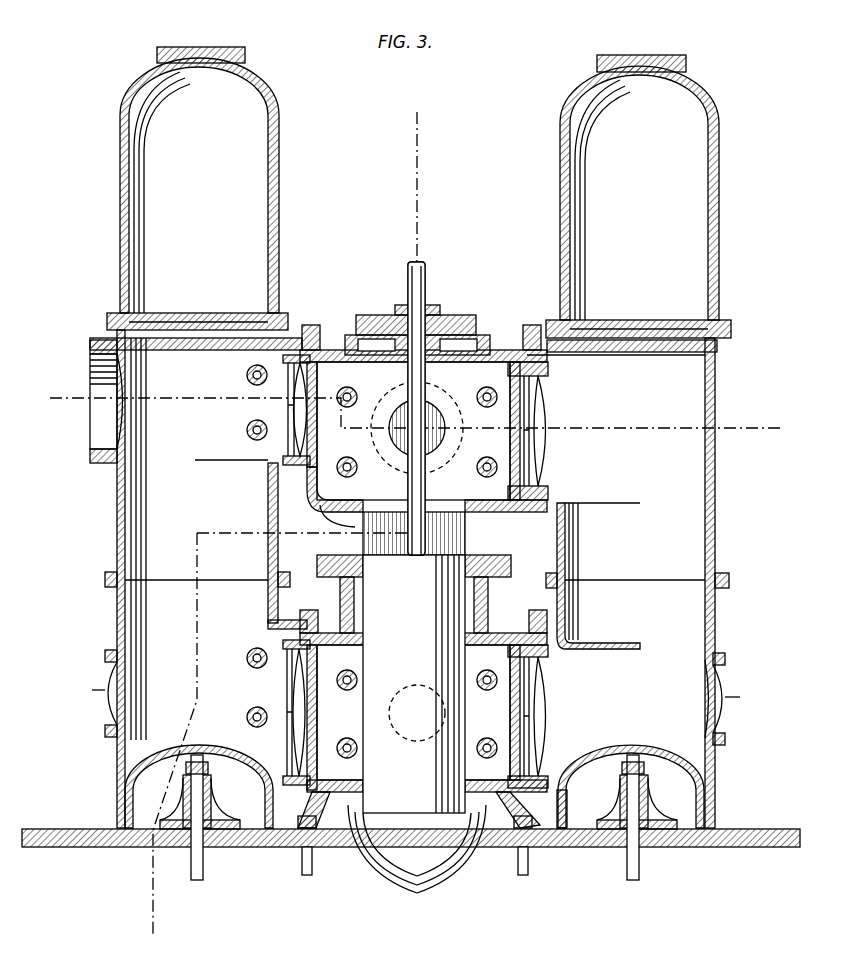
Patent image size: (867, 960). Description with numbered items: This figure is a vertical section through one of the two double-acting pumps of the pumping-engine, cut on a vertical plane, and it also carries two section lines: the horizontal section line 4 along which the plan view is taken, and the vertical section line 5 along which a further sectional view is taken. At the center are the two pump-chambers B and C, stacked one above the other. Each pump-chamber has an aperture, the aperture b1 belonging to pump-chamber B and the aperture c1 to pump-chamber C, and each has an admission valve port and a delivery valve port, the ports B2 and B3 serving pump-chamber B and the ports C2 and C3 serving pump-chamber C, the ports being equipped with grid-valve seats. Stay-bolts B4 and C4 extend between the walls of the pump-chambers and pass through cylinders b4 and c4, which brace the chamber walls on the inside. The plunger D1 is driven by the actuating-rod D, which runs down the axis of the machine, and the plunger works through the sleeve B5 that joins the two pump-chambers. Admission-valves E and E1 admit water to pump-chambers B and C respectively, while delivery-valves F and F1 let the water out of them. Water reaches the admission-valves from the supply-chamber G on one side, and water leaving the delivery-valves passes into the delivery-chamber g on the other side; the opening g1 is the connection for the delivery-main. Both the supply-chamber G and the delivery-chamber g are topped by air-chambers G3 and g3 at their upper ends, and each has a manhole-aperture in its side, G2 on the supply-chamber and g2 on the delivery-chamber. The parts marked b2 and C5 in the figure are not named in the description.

The air-chamber g3 is at (197, 188).
The air-chamber G3 is at (638, 196).
The delivery-chamber g is at (198, 579).
The opening g1 is at (106, 401).
The manhole-aperture g2 is at (107, 705).
The supply-chamber G is at (637, 583).
The manhole-aperture G2 is at (727, 680).
The section line 4 is at (406, 414).
The section line 5 is at (287, 527).
The pump-chamber B is at (423, 416).
The admission valve port B2 is at (546, 413).
The delivery valve port B3 is at (306, 392).
The stay-bolt B4 is at (349, 458).
The sleeve B5 is at (414, 533).
The aperture b1 is at (438, 449).
The opening seat circle b2 is at (423, 428).
The cylinder b4 is at (356, 463).
The actuating-rod D is at (426, 284).
The plunger D1 is at (414, 636).
The admission-valve E is at (540, 447).
The admission-valve E1 is at (540, 731).
The delivery-valve F is at (290, 400).
The delivery-valve F1 is at (290, 678).
The pump-chamber C is at (422, 719).
The admission valve port C2 is at (544, 690).
The delivery valve port C3 is at (305, 700).
The stay-bolt C4 is at (341, 672).
The cylinder c4 is at (424, 699).
The cup supports C5 is at (352, 615).
The aperture c1 is at (405, 745).